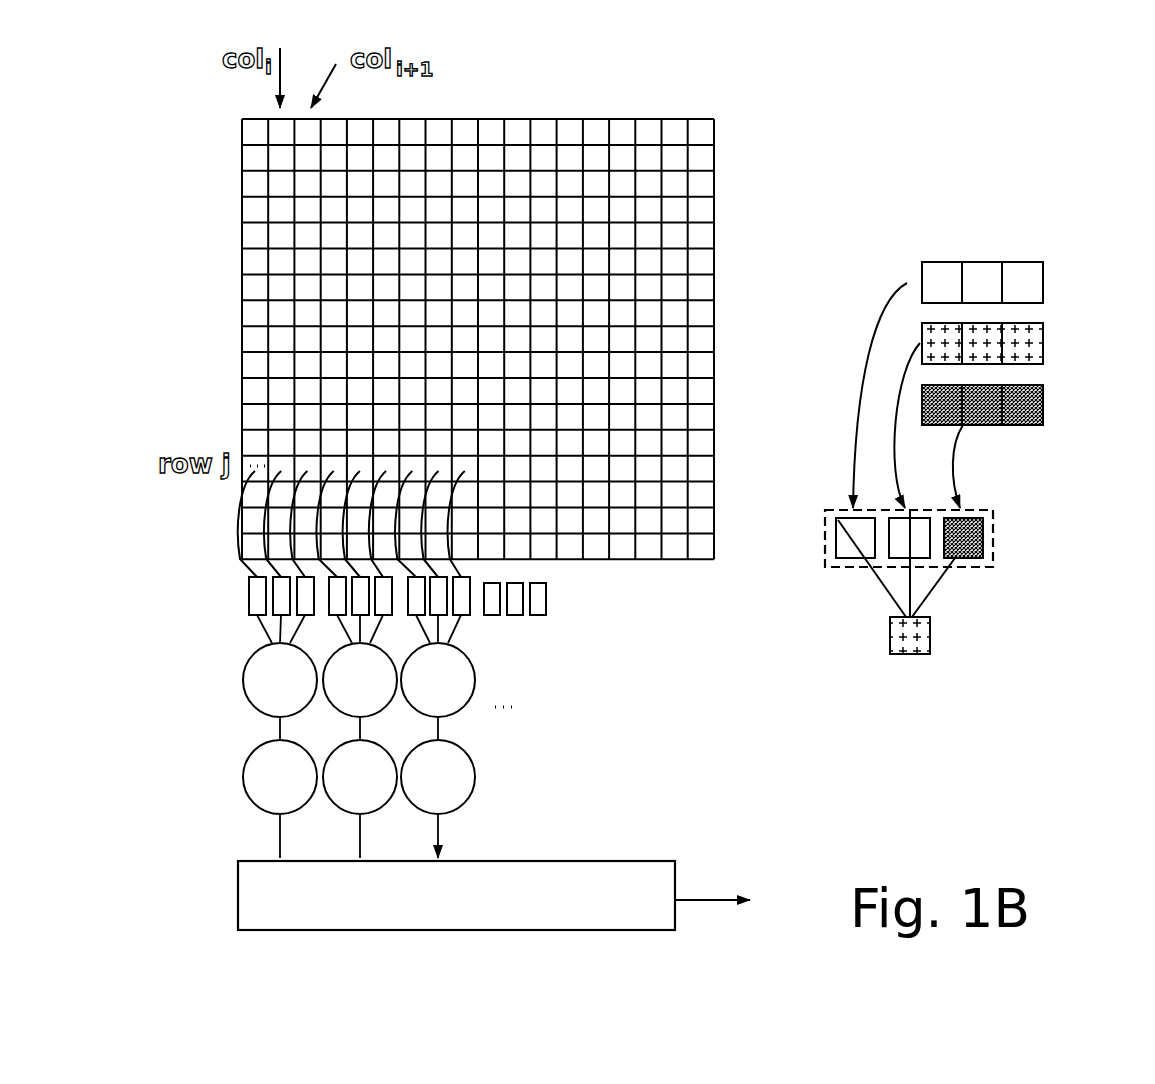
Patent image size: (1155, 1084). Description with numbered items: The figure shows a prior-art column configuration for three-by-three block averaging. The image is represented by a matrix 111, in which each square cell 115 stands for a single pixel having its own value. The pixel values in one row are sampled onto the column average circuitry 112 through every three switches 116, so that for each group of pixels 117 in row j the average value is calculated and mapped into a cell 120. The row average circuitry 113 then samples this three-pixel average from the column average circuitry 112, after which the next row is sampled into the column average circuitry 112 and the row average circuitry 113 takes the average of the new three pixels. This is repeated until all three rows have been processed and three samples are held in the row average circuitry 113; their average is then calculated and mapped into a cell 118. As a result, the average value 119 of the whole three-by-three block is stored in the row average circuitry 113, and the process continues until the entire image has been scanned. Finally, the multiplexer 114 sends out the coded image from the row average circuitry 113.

The matrix 111 is at (236, 205).
The column average circuitry 112 is at (178, 679).
The row average circuitry 113 is at (176, 776).
The multiplexer 114 is at (228, 890).
The cell 115 is at (237, 418).
The switches 116 is at (240, 600).
The group of pixels 117 is at (1032, 253).
The cell 118 is at (987, 566).
The average value 119 is at (903, 662).
The cell 120 is at (833, 566).